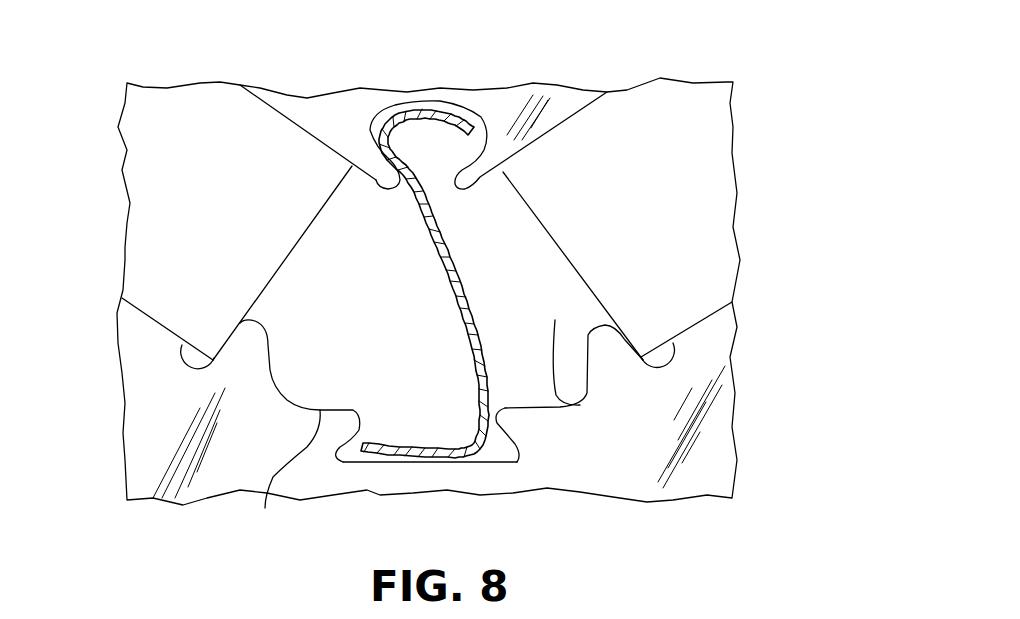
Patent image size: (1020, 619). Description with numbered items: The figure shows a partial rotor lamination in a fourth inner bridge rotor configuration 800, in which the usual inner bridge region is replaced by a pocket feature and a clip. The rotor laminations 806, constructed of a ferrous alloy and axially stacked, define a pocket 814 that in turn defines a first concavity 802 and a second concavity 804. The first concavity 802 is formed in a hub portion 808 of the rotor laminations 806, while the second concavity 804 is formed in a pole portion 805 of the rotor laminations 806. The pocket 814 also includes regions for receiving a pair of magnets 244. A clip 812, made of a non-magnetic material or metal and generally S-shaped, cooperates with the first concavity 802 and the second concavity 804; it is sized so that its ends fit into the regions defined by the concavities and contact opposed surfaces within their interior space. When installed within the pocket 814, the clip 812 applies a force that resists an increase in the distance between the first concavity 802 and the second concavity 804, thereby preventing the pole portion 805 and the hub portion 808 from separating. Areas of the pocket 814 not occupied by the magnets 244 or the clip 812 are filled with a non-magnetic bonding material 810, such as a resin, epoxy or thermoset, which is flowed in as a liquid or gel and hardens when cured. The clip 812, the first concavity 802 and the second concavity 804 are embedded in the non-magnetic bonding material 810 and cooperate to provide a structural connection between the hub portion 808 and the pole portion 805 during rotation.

The fourth inner bridge rotor configuration 800 is at (742, 57).
The magnets 244 is at (180, 195).
The first concavity 802 is at (503, 453).
The second concavity 804 is at (433, 146).
The pole portion 805 is at (553, 116).
The rotor laminations 806 is at (712, 457).
The hub portion 808 is at (415, 470).
The non-magnetic bonding material 810 is at (567, 405).
The clip 812 is at (445, 276).
The pocket 814 is at (285, 476).